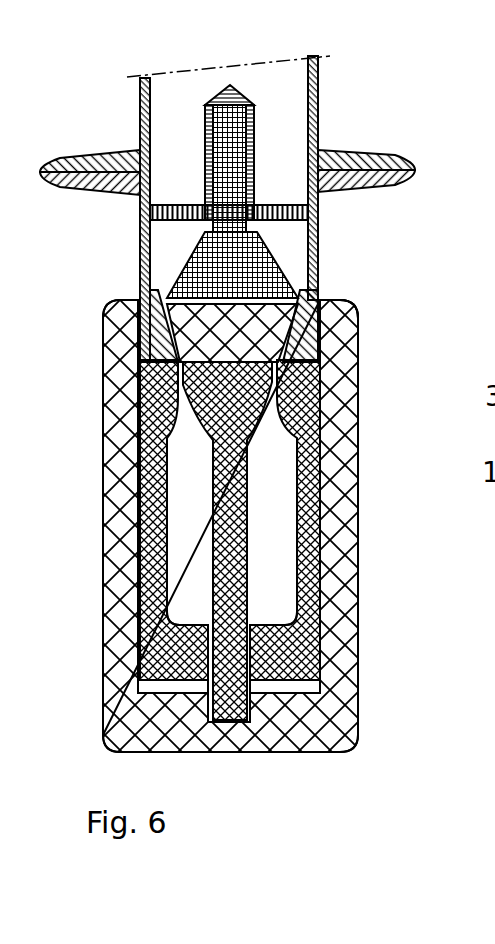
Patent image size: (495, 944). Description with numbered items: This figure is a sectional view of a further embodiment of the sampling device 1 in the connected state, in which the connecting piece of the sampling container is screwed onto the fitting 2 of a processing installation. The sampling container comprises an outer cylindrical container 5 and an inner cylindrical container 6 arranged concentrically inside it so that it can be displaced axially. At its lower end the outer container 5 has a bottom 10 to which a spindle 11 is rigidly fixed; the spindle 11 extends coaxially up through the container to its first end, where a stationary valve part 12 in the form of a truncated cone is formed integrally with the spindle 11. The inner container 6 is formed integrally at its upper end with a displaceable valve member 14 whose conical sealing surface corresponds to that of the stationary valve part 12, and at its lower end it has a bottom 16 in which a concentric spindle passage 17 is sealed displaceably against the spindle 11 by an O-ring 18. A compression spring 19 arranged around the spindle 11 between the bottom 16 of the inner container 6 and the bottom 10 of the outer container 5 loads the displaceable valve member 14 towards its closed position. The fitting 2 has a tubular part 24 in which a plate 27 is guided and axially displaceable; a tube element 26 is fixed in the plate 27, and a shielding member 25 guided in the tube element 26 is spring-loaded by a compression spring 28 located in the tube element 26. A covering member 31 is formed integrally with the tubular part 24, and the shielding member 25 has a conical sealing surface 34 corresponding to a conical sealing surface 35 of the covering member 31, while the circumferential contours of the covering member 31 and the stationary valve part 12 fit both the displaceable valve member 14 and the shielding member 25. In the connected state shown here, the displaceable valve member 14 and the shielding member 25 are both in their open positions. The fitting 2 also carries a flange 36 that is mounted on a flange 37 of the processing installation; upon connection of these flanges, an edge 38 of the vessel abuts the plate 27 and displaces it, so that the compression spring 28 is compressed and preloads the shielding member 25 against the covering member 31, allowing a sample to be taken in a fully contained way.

The sampling device 1 is at (384, 722).
The fitting 2 is at (312, 232).
The outer cylindrical container 5 is at (348, 576).
The inner cylindrical container 6 is at (337, 482).
The bottom 10 is at (320, 733).
The spindle 11 is at (243, 546).
The stationary valve part 12 is at (247, 437).
The displaceable valve member 14 is at (137, 400).
The bottom 16 is at (337, 690).
The spindle passage 17 is at (225, 718).
The O-ring 18 is at (340, 605).
The compression spring 19 is at (273, 733).
The tubular part 24 is at (172, 251).
The shielding member 25 is at (265, 255).
The tube element 26 is at (250, 152).
The plate 27 is at (278, 206).
The compression spring 28 is at (238, 108).
The covering member 31 is at (325, 323).
The conical sealing surface 34 is at (300, 296).
The conical sealing surface 35 is at (343, 377).
The flange 36 is at (372, 178).
The flange 37 is at (408, 161).
The edge 38 is at (158, 204).